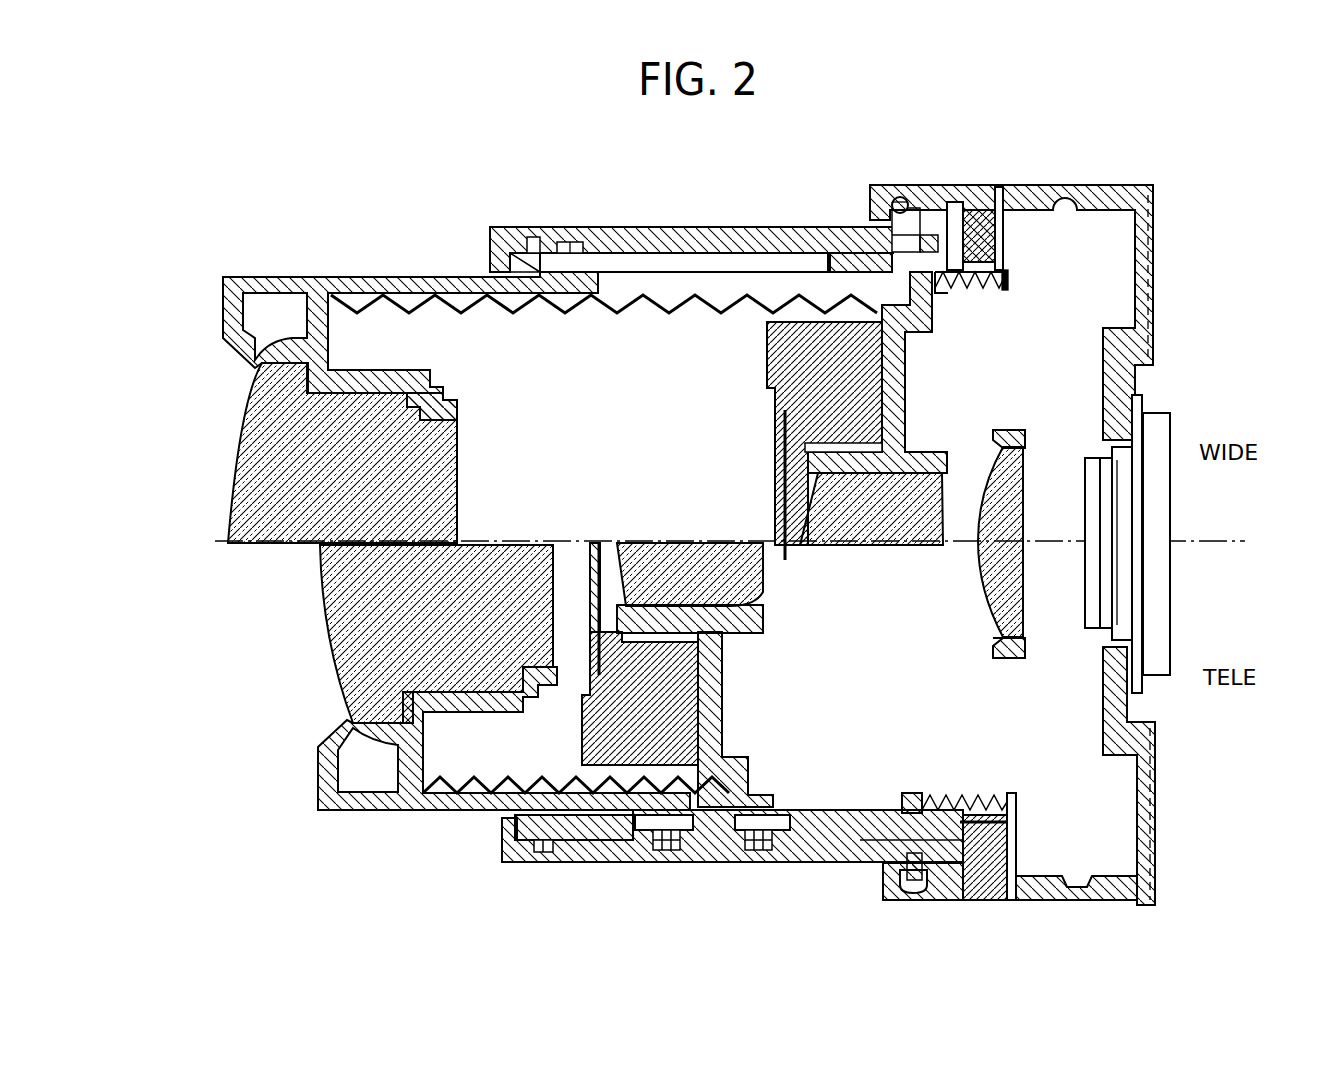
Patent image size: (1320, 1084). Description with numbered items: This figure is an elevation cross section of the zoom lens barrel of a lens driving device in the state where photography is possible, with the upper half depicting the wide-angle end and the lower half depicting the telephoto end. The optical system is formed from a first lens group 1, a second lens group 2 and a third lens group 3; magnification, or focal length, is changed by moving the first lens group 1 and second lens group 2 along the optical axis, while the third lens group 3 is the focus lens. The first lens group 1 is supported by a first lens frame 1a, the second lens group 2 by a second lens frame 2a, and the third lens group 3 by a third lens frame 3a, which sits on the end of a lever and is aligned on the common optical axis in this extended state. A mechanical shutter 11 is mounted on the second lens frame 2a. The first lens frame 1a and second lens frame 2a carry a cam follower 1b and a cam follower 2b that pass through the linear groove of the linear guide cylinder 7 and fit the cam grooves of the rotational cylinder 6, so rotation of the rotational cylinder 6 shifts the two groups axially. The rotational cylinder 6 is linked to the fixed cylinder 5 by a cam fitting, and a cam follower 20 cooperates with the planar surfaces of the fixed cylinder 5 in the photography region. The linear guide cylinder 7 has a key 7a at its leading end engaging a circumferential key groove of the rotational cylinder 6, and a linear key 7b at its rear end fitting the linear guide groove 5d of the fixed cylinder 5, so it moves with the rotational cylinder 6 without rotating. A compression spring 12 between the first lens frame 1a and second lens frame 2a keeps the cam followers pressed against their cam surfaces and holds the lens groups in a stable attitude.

The first lens group 1 is at (240, 488).
The first lens frame 1a is at (434, 394).
The cam follower 1b is at (573, 242).
The second lens group 2 is at (869, 522).
The second lens frame 2a is at (898, 362).
The cam follower 2b is at (921, 248).
The third lens group 3 is at (989, 582).
The third lens frame 3a is at (1007, 445).
The fixed cylinder 5 is at (1020, 188).
The linear guide groove 5d is at (1036, 876).
The rotational cylinder 6 is at (641, 228).
The linear guide cylinder 7 is at (721, 256).
The key 7a is at (546, 852).
The linear key 7b is at (970, 882).
The mechanical shutter 11 is at (788, 466).
The compression spring 12 is at (633, 305).
The cam follower 20 is at (899, 197).